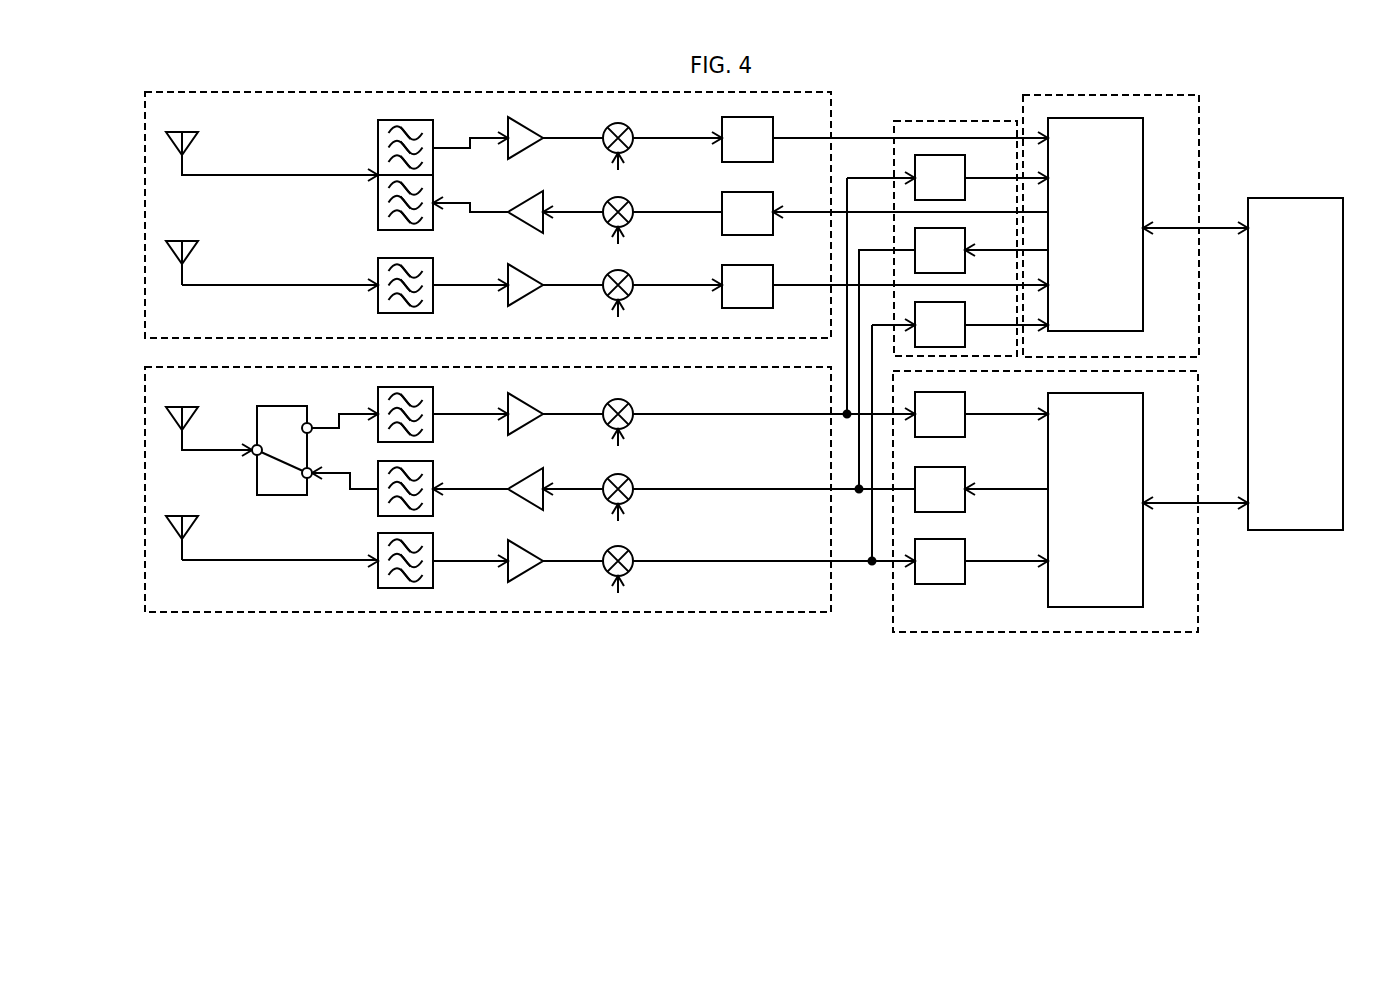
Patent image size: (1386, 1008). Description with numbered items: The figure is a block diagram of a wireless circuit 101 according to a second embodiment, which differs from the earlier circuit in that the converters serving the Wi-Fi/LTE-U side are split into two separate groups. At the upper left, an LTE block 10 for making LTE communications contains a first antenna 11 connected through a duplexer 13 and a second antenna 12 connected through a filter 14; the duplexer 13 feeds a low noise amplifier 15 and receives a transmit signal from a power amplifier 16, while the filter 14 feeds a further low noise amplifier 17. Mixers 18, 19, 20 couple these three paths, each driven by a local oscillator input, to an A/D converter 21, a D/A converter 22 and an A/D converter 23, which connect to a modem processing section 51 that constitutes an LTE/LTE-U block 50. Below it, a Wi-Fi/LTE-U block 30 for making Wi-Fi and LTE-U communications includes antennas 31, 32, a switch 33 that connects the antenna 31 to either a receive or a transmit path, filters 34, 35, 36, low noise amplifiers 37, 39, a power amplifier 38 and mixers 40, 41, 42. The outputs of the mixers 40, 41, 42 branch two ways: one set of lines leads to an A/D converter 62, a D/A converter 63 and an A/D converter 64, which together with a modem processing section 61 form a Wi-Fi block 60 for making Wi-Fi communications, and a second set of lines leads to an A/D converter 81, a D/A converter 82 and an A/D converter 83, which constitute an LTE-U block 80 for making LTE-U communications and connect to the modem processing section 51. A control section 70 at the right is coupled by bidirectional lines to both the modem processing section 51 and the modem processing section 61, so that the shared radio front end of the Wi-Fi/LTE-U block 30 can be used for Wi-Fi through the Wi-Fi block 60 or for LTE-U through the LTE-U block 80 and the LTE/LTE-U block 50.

The LTE block 10 is at (143, 320).
The antenna 11 is at (190, 142).
The antenna 12 is at (190, 251).
The duplexer 13 is at (434, 124).
The filter 14 is at (434, 262).
The low noise amplifier 15 is at (536, 127).
The power amplifier 16 is at (546, 199).
The low noise amplifier 17 is at (536, 274).
The mixer 18 is at (630, 127).
The mixer 19 is at (630, 201).
The mixer 20 is at (630, 274).
The A/D converter 21 is at (774, 122).
The D/A converter 22 is at (776, 204).
The A/D converter 23 is at (774, 270).
The Wi-Fi/LTE-U block 30 is at (143, 595).
The antenna 31 is at (190, 417).
The antenna 32 is at (190, 526).
The switch 33 is at (288, 406).
The filter 34 is at (434, 391).
The filter 35 is at (434, 465).
The filter 36 is at (434, 537).
The low noise amplifier 37 is at (536, 403).
The power amplifier 38 is at (546, 476).
The low noise amplifier 39 is at (536, 550).
The mixer 40 is at (630, 403).
The mixer 41 is at (630, 478).
The mixer 42 is at (630, 550).
The LTE/LTE-U block 50 is at (1203, 136).
The modem processing section 51 is at (1143, 124).
The Wi-Fi block 60 is at (1203, 411).
The modem processing section 61 is at (1143, 399).
The A/D converter 62 is at (966, 398).
The D/A converter 63 is at (968, 479).
The A/D converter 64 is at (966, 545).
The control section 70 is at (1296, 198).
The LTE-U block 80 is at (943, 122).
The A/D converter 81 is at (966, 160).
The D/A converter 82 is at (968, 241).
The A/D converter 83 is at (966, 308).
The wireless circuit 101 is at (1304, 127).